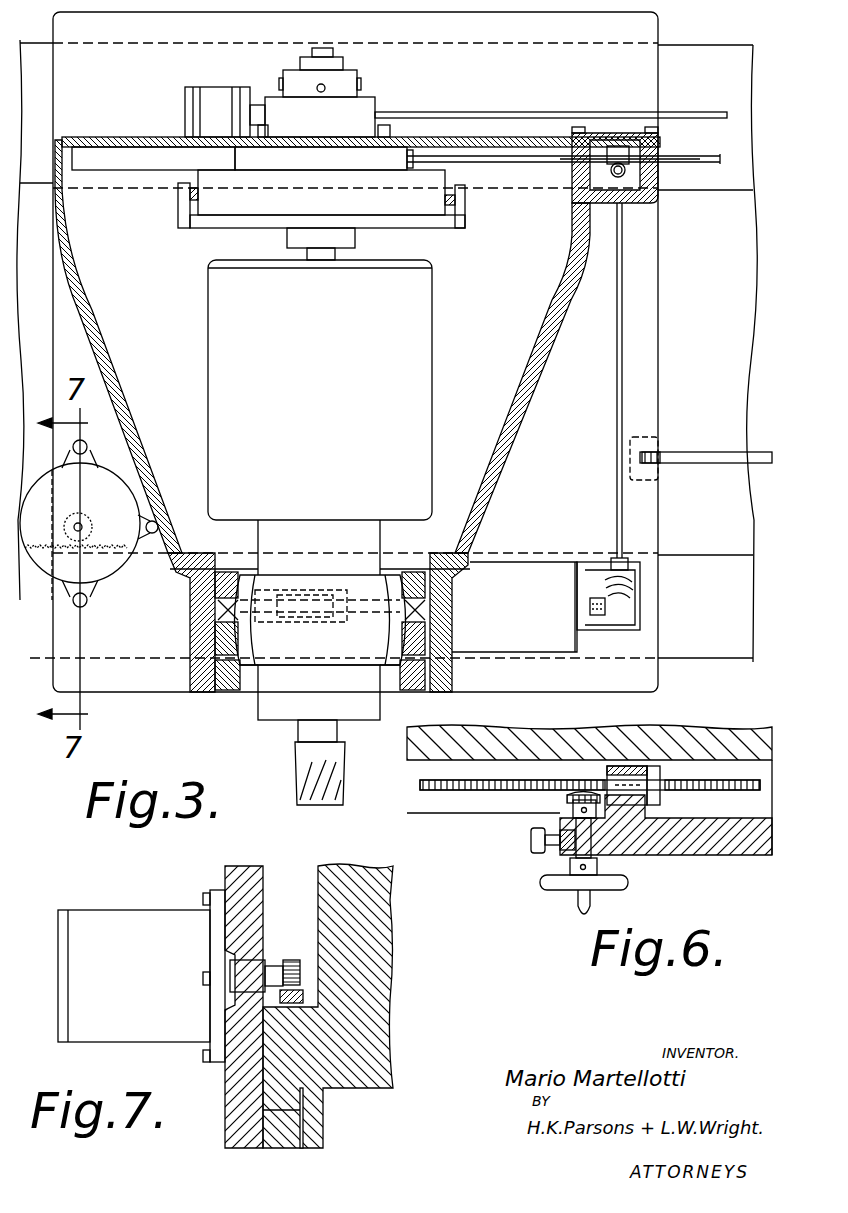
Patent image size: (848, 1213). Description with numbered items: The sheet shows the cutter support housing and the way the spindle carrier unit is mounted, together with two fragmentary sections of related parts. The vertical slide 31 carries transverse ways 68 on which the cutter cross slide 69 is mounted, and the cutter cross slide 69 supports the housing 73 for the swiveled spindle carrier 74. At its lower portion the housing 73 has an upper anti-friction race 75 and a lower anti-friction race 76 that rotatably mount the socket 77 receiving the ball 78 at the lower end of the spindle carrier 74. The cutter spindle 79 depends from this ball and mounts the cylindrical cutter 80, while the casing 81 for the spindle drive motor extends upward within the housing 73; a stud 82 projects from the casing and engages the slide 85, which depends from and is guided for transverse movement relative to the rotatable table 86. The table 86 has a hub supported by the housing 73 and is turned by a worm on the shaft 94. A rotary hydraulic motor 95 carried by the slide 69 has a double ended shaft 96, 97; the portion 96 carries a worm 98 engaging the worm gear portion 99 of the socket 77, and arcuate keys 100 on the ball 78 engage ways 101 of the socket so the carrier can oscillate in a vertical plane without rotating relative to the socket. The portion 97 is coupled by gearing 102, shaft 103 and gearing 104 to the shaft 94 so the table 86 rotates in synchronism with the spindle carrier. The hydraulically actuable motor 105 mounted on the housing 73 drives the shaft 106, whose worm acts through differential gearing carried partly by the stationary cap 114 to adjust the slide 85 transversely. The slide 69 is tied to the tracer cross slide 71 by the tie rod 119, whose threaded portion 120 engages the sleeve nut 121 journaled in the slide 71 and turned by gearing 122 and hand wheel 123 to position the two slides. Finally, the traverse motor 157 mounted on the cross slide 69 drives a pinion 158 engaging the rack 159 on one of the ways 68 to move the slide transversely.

In FIG. 3, the vertical slide 31 is at (762, 285).
In FIG. 3, the transverse ways 68 is at (742, 53).
In FIG. 3, the cutter cross slide 69 is at (660, 31).
In FIG. 7, the cutter cross slide 69 is at (243, 877).
In FIG. 6, the tracer cross slide 71 is at (659, 855).
In FIG. 3, the housing 73 is at (513, 455).
In FIG. 3, the spindle carrier 74 is at (361, 716).
In FIG. 3, the upper anti-friction race 75 is at (462, 576).
In FIG. 3, the lower anti-friction race 76 is at (449, 669).
In FIG. 3, the socket 77 is at (446, 633).
In FIG. 3, the ball 78 is at (262, 652).
In FIG. 3, the cutter spindle 79 is at (296, 724).
In FIG. 3, the cylindrical cutter 80 is at (345, 790).
In FIG. 3, the casing 81 is at (440, 256).
In FIG. 3, the stud 82 is at (336, 256).
In FIG. 3, the slide 85 is at (262, 222).
In FIG. 3, the rotatable table 86 is at (262, 192).
In FIG. 3, the shaft 94 is at (696, 166).
In FIG. 3, the rotary hydraulic motor 95 is at (545, 646).
In FIG. 3, the shaft portion 96 is at (364, 596).
In FIG. 3, the shaft portion 97 is at (584, 612).
In FIG. 3, the worm 98 is at (322, 596).
In FIG. 3, the worm gear portion 99 is at (225, 604).
In FIG. 3, the arcuate keys 100 is at (395, 626).
In FIG. 3, the ways 101 is at (248, 662).
In FIG. 3, the gearing 102 is at (622, 609).
In FIG. 3, the shaft 103 is at (624, 353).
In FIG. 3, the gearing 104 is at (608, 152).
In FIG. 3, the hydraulically actuable motor 105 is at (232, 92).
In FIG. 3, the drive shaft 106 is at (575, 110).
In FIG. 3, the stationary cap 114 is at (353, 80).
In FIG. 3, the tie rod 119 is at (708, 466).
In FIG. 6, the threaded portion 120 is at (460, 794).
In FIG. 6, the sleeve nut 121 is at (640, 815).
In FIG. 6, the gearing 122 is at (567, 800).
In FIG. 6, the hand wheel 123 is at (548, 884).
In FIG. 3, the traverse motor 157 is at (125, 478).
In FIG. 7, the traverse motor 157 is at (147, 912).
In FIG. 3, the pinion 158 is at (88, 516).
In FIG. 7, the pinion 158 is at (290, 958).
In FIG. 3, the rack 159 is at (108, 541).
In FIG. 7, the rack 159 is at (305, 997).